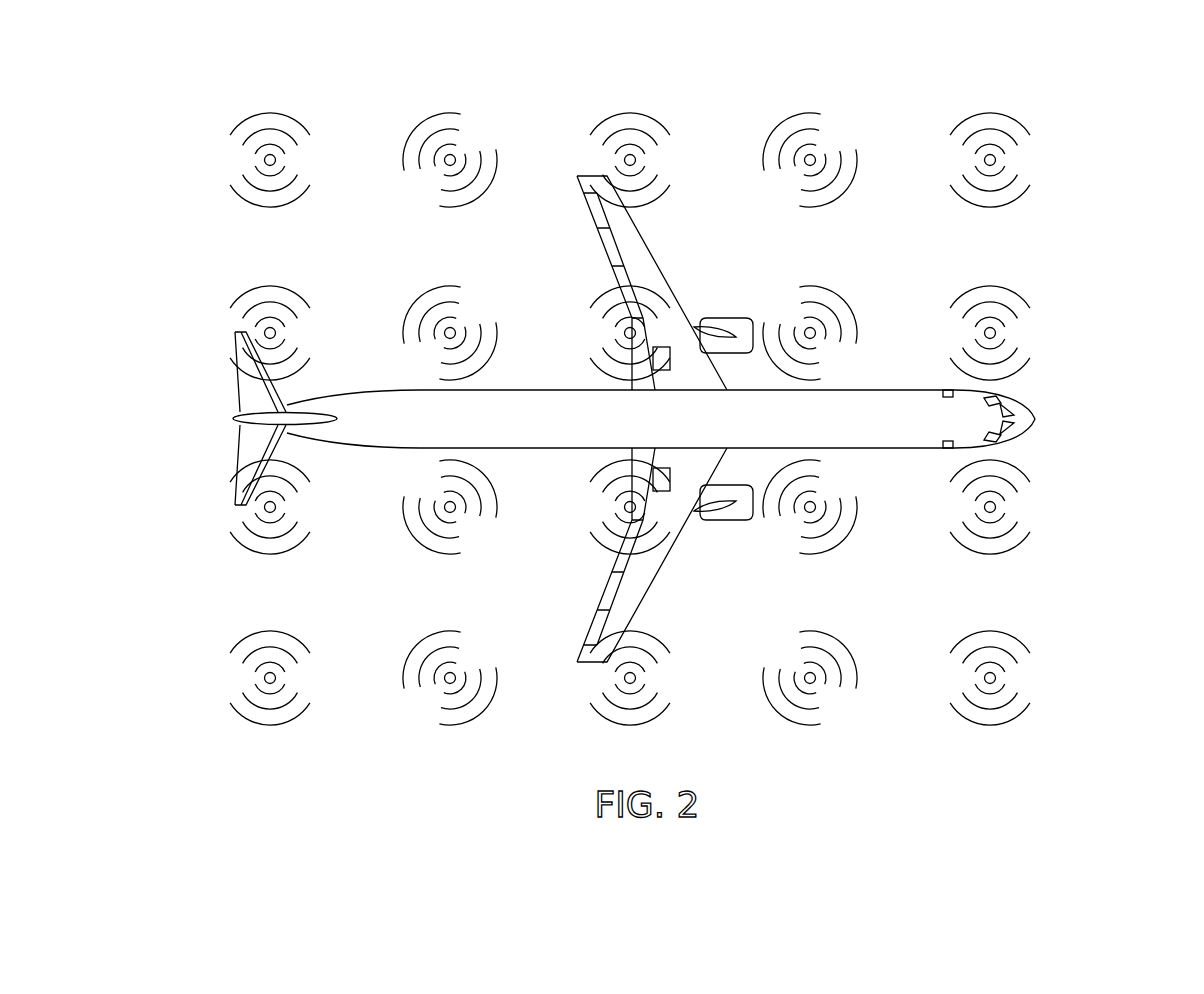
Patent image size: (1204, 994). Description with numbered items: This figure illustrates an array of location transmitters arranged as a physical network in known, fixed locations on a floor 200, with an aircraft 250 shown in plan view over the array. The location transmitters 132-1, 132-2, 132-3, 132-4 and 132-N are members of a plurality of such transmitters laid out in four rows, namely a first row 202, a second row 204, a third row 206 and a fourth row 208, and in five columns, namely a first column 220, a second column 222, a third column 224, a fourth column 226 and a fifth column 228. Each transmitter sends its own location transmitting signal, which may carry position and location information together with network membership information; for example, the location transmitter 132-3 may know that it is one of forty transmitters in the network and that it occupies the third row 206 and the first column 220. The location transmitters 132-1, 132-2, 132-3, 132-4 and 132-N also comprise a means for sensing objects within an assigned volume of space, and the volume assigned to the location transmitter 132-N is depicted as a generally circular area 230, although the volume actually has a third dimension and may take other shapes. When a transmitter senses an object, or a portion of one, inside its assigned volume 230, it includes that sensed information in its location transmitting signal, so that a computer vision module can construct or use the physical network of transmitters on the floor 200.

The floor 200 is at (1108, 142).
The first row 202 is at (222, 166).
The second row 204 is at (222, 339).
The third row 206 is at (222, 513).
The fourth row 208 is at (222, 685).
The first column 220 is at (270, 112).
The second column 222 is at (451, 112).
The third column 224 is at (631, 112).
The fourth column 226 is at (811, 112).
The fifth column 228 is at (991, 112).
The assigned volume 230 is at (945, 629).
The location transmitter 132-1 is at (276, 160).
The location transmitter 132-2 is at (276, 333).
The location transmitter 132-3 is at (276, 507).
The location transmitter 132-4 is at (276, 678).
The location transmitter 132-N is at (996, 678).
The aircraft 250 is at (806, 430).